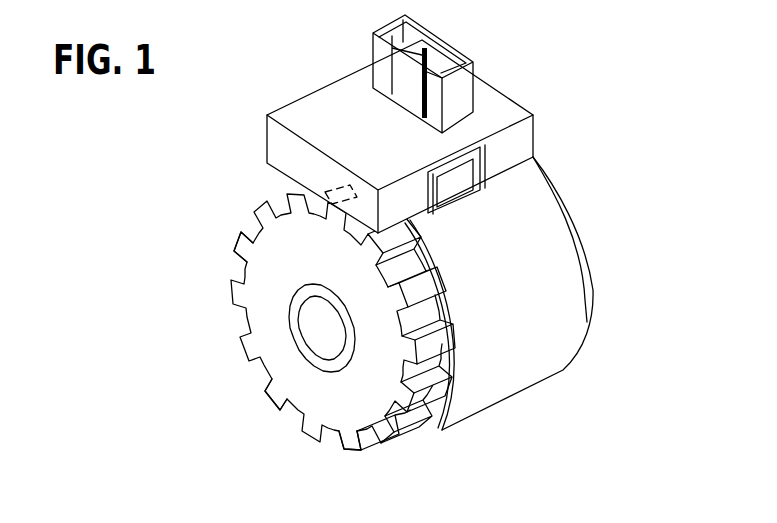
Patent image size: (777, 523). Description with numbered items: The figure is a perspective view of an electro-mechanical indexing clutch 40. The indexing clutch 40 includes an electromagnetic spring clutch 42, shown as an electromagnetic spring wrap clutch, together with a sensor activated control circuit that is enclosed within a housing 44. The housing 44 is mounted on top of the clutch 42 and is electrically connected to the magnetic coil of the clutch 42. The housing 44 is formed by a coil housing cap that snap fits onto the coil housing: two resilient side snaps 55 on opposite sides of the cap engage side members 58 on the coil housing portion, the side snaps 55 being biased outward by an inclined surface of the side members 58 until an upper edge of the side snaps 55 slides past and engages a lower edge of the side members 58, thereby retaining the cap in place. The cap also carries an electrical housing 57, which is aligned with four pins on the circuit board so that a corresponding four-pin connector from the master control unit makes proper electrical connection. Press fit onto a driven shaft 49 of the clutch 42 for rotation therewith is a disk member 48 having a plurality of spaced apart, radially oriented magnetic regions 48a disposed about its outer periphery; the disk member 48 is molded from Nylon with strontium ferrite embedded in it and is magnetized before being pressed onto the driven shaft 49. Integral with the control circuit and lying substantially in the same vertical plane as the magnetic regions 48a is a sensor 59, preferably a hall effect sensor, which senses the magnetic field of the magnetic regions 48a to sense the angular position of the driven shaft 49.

The indexing clutch 40 is at (595, 138).
The electromagnetic spring clutch 42 is at (588, 226).
The housing 44 is at (312, 88).
The disk member 48 is at (370, 420).
The magnetic regions 48a is at (228, 262).
The driven shaft 49 is at (315, 337).
The side snaps 55 is at (481, 173).
The electrical housing 57 is at (460, 102).
The side members 58 is at (450, 182).
The sensor 59 is at (325, 192).